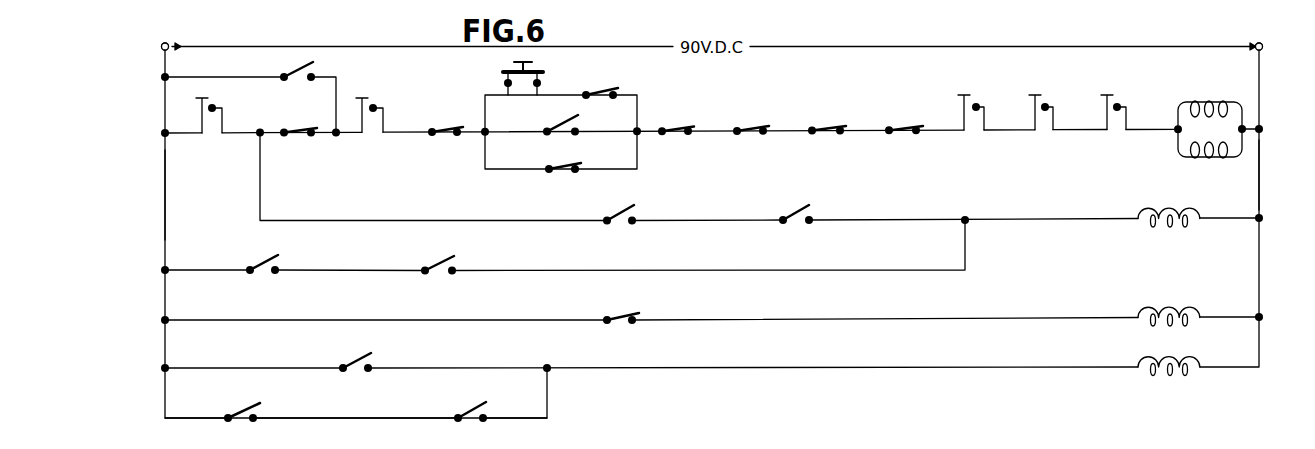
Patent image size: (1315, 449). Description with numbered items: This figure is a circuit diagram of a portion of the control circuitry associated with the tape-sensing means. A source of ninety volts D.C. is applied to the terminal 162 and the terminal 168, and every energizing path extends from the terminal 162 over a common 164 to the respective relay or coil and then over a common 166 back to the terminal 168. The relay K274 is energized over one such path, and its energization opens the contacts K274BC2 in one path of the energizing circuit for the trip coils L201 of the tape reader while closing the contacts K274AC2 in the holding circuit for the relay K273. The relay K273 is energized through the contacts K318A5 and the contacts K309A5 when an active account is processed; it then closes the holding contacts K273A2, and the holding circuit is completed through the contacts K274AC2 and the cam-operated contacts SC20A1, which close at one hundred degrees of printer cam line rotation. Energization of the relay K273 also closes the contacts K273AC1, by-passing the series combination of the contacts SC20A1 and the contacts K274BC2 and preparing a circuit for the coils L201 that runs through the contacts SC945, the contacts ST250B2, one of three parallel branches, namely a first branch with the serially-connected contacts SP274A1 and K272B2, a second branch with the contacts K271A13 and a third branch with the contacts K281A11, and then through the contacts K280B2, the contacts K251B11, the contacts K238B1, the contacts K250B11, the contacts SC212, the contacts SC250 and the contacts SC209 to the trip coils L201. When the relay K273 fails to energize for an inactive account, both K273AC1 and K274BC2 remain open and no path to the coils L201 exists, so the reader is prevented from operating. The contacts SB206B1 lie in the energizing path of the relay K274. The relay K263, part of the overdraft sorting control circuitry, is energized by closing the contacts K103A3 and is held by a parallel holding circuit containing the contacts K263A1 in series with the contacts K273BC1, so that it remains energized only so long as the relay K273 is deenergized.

The terminal 162 is at (162, 44).
The common 164 is at (165, 191).
The common 166 is at (1260, 176).
The terminal 168 is at (1262, 43).
The contacts K273AC1 is at (300, 68).
The contacts SC20A1 is at (215, 112).
The contacts K274BC2 is at (297, 140).
The contacts SC945 is at (404, 82).
The contacts ST250B2 is at (453, 158).
The contacts SP274A1 is at (518, 68).
The contacts K272B2 is at (604, 90).
The contacts K271A13 is at (545, 128).
The contacts K281A11 is at (566, 170).
The contacts K280B2 is at (677, 128).
The contacts K251B11 is at (752, 127).
The relay K238 contact B1 K238B1 is at (817, 127).
The relay K250 contact B11 K250B11 is at (902, 127).
The contacts SC212 is at (1003, 77).
The contacts SC250 is at (1069, 84).
The contacts SC209 is at (1145, 75).
The trip coils L201 is at (1218, 103).
The contacts K274AC2 is at (620, 213).
The contacts K273A2 is at (790, 210).
The relay K273 is at (1173, 208).
The relay K318 contact A5 K318A5 is at (258, 263).
The contacts K309A5 is at (438, 262).
The switch contact SB206B1 is at (617, 318).
The relay K274 is at (1177, 308).
The contacts K103A3 is at (353, 362).
The relay K263 is at (1177, 358).
The contacts K273BC1 is at (258, 389).
The contacts K263A1 is at (470, 410).